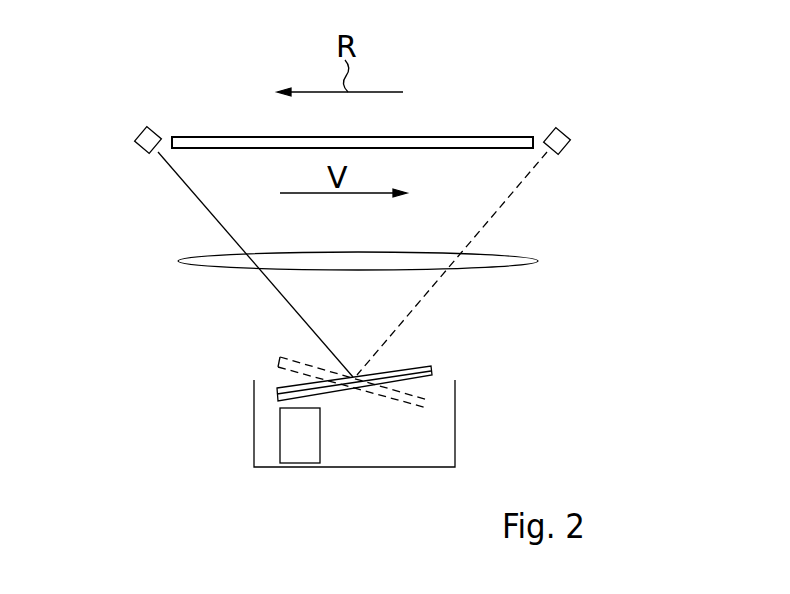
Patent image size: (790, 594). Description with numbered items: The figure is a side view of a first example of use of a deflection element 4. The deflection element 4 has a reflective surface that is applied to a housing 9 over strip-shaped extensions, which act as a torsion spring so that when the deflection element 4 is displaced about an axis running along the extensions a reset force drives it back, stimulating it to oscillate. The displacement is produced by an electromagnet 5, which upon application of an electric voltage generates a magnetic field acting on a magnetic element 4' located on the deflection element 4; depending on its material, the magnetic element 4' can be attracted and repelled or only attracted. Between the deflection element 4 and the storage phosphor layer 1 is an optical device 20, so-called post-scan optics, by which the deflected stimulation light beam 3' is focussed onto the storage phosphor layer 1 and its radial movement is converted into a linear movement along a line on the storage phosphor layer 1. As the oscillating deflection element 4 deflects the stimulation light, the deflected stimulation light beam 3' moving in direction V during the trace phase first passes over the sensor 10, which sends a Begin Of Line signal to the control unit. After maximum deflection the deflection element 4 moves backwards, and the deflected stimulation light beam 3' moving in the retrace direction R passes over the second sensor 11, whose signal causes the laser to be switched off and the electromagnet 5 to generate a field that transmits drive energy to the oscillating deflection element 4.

The storage phosphor layer 1 is at (500, 138).
The deflected stimulation light beam 3' is at (352, 264).
The deflection element 4 is at (360, 358).
The magnetic element 4' is at (353, 398).
The electromagnet 5 is at (305, 455).
The housing 9 is at (456, 424).
The sensor 10 is at (142, 128).
The second sensor 11 is at (565, 130).
The optical device 20 is at (538, 262).